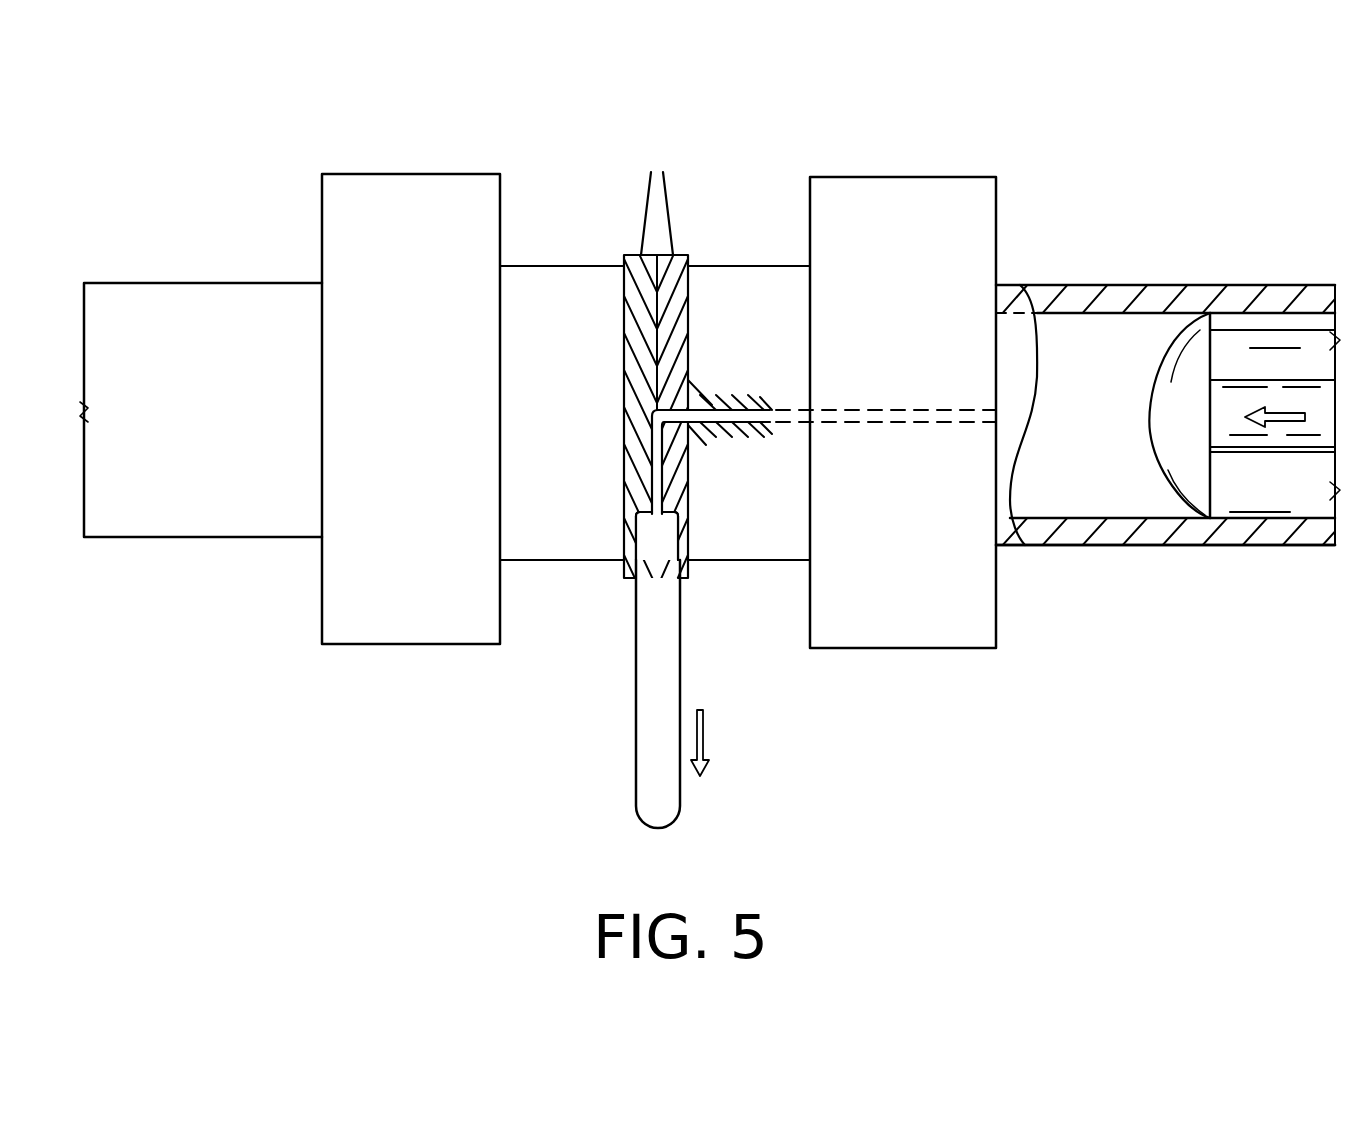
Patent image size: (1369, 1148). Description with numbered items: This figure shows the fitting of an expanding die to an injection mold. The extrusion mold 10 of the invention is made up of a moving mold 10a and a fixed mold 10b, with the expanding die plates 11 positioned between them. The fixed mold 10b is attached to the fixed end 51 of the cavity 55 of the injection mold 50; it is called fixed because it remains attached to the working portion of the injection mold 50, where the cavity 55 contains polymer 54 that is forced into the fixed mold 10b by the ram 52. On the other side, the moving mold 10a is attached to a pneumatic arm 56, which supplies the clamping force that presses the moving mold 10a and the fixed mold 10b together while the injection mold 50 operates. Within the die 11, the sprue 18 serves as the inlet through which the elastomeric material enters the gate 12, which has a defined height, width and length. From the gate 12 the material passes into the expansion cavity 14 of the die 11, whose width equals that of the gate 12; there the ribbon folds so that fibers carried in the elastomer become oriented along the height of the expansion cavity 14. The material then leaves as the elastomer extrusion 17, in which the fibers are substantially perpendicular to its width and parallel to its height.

The extrusion mold 10 is at (358, 772).
The moving mold 10a is at (472, 187).
The fixed mold 10b is at (838, 192).
The die 11 is at (662, 196).
The gate 12 is at (653, 453).
The expansion cavity 14 is at (633, 533).
The elastomer extrusion 17 is at (650, 722).
The sprue 18 is at (733, 410).
The injection mold 50 is at (204, 623).
The fixed end 51 is at (993, 298).
The ram 52 is at (1186, 350).
The polymer 54 is at (1053, 330).
The cavity 55 is at (1085, 545).
The pneumatic arm 56 is at (220, 297).